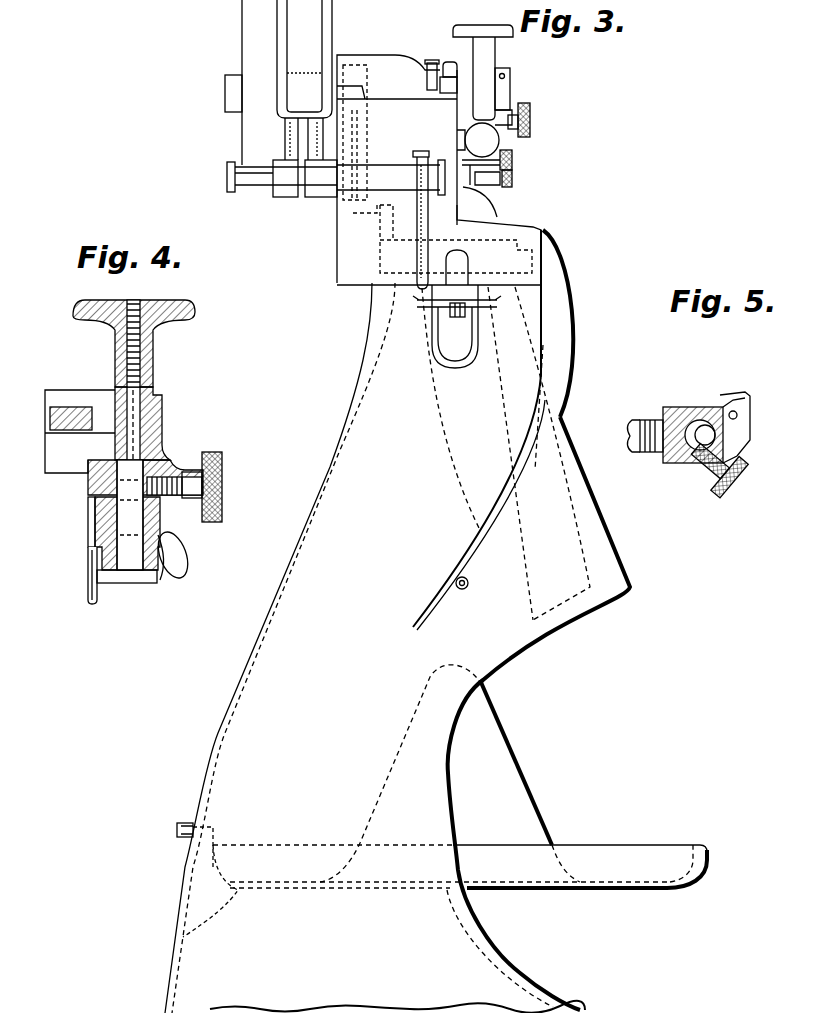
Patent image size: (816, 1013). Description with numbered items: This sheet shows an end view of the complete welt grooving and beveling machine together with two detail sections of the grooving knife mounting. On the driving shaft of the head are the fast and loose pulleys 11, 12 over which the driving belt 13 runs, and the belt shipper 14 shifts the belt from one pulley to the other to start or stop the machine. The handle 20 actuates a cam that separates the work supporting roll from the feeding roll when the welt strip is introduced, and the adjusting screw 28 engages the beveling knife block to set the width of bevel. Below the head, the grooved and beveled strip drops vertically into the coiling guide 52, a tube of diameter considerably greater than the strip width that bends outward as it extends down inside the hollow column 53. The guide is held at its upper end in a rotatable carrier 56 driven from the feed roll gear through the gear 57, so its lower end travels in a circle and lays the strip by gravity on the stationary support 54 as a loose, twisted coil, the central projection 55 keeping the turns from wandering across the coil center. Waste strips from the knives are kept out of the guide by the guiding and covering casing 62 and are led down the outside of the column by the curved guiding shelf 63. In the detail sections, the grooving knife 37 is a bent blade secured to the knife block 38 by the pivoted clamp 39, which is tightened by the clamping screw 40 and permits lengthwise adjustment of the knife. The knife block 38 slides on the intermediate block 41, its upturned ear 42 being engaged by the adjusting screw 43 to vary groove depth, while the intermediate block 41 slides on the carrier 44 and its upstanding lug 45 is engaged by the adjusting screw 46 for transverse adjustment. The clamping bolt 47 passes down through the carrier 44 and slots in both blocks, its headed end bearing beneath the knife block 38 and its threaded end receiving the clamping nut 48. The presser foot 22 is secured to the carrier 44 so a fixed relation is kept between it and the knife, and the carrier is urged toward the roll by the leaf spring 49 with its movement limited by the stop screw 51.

In FIG. 3, the fast pulley 11 is at (318, 28).
In FIG. 3, the loose pulley 12 is at (247, 26).
In FIG. 3, the driving belt 13 is at (290, 105).
In FIG. 3, the belt shipper 14 is at (295, 172).
In FIG. 3, the handle 20 is at (420, 265).
In FIG. 4, the presser foot 22 is at (88, 532).
In FIG. 3, the adjusting screw 28 is at (514, 180).
In FIG. 4, the grooving knife 37 is at (90, 597).
In FIG. 5, the grooving knife 37 is at (738, 395).
In FIG. 4, the knife block 38 is at (110, 573).
In FIG. 5, the knife block 38 is at (698, 408).
In FIG. 5, the pivoted clamp 39 is at (738, 414).
In FIG. 3, the clamping screw 40 is at (514, 160).
In FIG. 4, the clamping screw 40 is at (185, 562).
In FIG. 5, the clamping screw 40 is at (720, 497).
In FIG. 4, the intermediate block 41 is at (97, 520).
In FIG. 5, the upturned ear 42 is at (636, 420).
In FIG. 3, the adjusting screw 43 is at (495, 142).
In FIG. 3, the carrier 44 is at (487, 100).
In FIG. 4, the carrier 44 is at (155, 433).
In FIG. 4, the upstanding lug 45 is at (220, 506).
In FIG. 3, the adjusting screw 46 is at (532, 120).
In FIG. 4, the adjusting screw 46 is at (224, 468).
In FIG. 4, the clamping bolt 47 is at (132, 412).
In FIG. 3, the clamping nut 48 is at (508, 35).
In FIG. 4, the clamping nut 48 is at (190, 318).
In FIG. 3, the leaf spring 49 is at (432, 63).
In FIG. 3, the stop screw 51 is at (450, 63).
In FIG. 3, the coiling guide 52 is at (467, 475).
In FIG. 3, the hollow column 53 is at (613, 548).
In FIG. 3, the stationary support 54 is at (688, 835).
In FIG. 3, the central projection 55 is at (497, 760).
In FIG. 3, the rotatable carrier 56 is at (520, 260).
In FIG. 3, the gear 57 is at (340, 268).
In FIG. 3, the guiding and covering casing 62 is at (493, 213).
In FIG. 3, the curved guiding shelf 63 is at (565, 357).